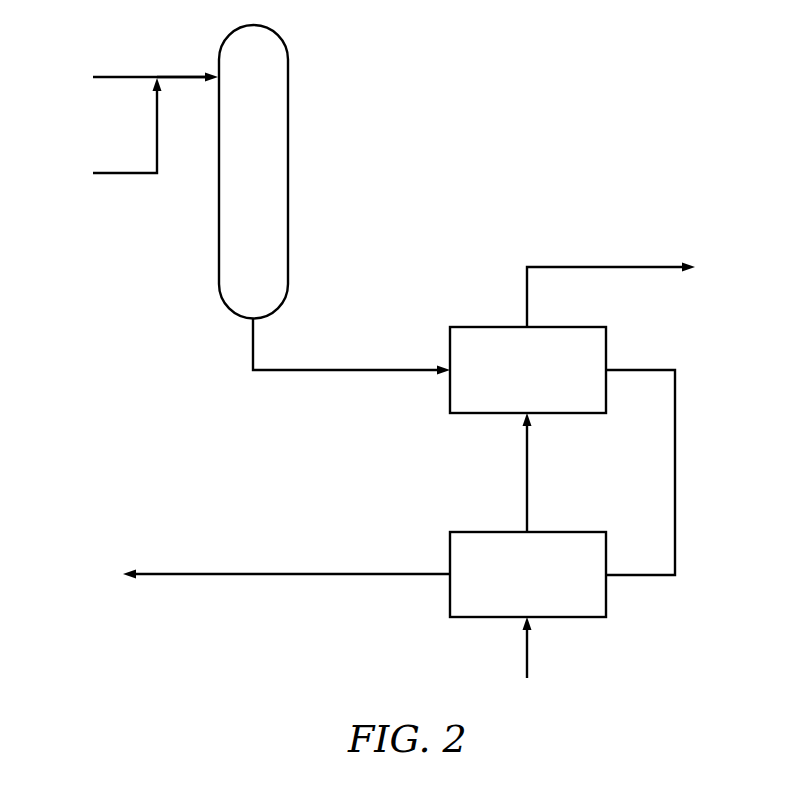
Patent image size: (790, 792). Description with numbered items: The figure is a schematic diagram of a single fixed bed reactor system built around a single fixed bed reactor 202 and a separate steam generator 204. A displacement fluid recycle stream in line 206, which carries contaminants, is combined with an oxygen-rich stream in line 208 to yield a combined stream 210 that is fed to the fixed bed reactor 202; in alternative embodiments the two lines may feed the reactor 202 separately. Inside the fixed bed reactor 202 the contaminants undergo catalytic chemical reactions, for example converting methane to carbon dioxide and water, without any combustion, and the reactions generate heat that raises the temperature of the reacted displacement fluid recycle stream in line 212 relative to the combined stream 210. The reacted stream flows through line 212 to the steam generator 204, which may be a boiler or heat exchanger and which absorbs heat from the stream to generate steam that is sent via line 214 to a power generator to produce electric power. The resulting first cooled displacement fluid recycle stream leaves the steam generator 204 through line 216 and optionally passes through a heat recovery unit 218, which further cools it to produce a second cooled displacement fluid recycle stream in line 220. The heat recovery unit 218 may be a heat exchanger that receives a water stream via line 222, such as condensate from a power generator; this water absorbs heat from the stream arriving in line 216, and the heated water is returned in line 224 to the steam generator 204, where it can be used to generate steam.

The single fixed bed reactor 202 is at (288, 74).
The steam generator 204 is at (482, 327).
The displacement fluid recycle stream line 206 is at (120, 77).
The oxygen-rich stream line 208 is at (120, 173).
The combined stream 210 is at (184, 75).
The reacted displacement fluid recycle stream line 212 is at (350, 370).
The steam line 214 is at (601, 267).
The first cooled displacement fluid recycle stream line 216 is at (675, 462).
The heat recovery unit 218 is at (583, 618).
The second cooled displacement fluid recycle stream line 220 is at (285, 574).
The water stream line 222 is at (528, 652).
The heated water line 224 is at (530, 470).